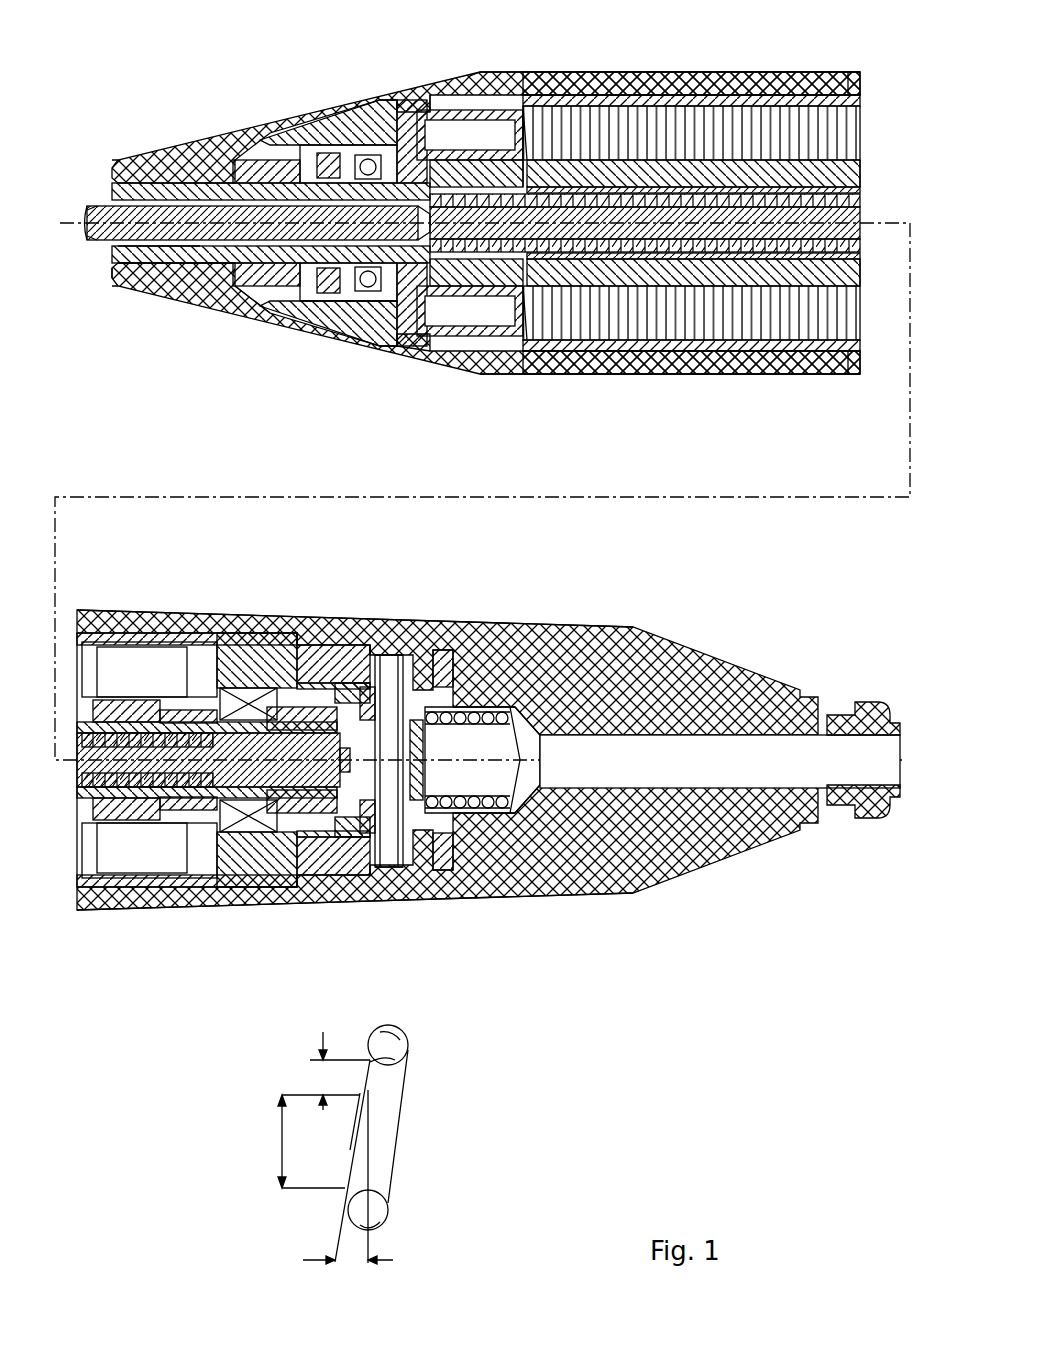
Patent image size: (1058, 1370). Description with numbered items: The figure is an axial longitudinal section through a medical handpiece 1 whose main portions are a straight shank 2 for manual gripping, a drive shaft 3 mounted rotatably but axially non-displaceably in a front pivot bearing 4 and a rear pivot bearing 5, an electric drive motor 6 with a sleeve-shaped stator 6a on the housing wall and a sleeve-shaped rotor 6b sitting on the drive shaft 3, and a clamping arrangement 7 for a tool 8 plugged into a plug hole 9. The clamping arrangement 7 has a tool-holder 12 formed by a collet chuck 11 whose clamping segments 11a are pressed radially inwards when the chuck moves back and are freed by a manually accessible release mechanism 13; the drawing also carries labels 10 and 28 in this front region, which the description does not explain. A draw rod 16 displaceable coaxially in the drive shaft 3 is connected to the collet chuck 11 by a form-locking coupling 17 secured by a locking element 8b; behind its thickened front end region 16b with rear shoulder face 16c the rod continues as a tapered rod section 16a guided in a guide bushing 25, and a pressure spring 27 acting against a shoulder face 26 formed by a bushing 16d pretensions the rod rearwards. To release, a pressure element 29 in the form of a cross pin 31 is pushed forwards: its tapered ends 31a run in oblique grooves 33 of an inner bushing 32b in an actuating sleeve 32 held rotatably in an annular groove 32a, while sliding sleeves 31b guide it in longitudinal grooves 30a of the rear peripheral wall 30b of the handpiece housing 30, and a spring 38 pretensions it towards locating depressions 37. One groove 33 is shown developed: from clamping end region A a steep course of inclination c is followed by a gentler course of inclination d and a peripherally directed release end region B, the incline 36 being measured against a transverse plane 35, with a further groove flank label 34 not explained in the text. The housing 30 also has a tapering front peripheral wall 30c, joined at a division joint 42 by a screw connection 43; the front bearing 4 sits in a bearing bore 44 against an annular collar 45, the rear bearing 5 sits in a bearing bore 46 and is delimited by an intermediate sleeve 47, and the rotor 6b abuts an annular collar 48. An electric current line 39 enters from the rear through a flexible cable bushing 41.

The handpiece 1 is at (378, 366).
The shank 2 is at (612, 380).
The drive shaft 3 is at (617, 290).
The front pivot bearing 4 is at (335, 128).
The rear pivot bearing 5 is at (250, 835).
The drive motor 6 is at (690, 72).
The stator 6a is at (768, 115).
The rotor 6b is at (845, 175).
The clamping arrangement 7 is at (160, 158).
The tool 8 is at (108, 193).
The locking element 8b is at (215, 180).
The plug hole 9 is at (100, 236).
The drive shaft 10 is at (97, 216).
The collet chuck 11 is at (138, 282).
The clamping segments 11a is at (155, 265).
The tool-holder 12 is at (105, 268).
The release mechanism 13 is at (387, 653).
The rod 16 is at (515, 325).
The rod section 16a is at (677, 290).
The front end region 16b is at (292, 138).
The shoulder face 16c is at (450, 180).
The bushing 16d is at (420, 770).
The coupling 17 is at (255, 300).
The guide bushing 25 is at (510, 175).
The shoulder face 26 is at (200, 712).
The pressure spring 27 is at (727, 290).
The stator lamination 28 is at (257, 760).
The pressure element 29 is at (455, 750).
The handpiece housing 30 is at (258, 615).
The longitudinal grooves 30a is at (365, 880).
The rear peripheral wall 30b is at (165, 614).
The front peripheral wall 30c is at (392, 100).
The cross pin 31 is at (377, 754).
The ends 31a is at (400, 652).
The sliding sleeves 31b is at (453, 680).
The actuating sleeve 32 is at (305, 643).
The annular groove 32a is at (330, 642).
The inner bushing 32b is at (355, 645).
The grooves 33 is at (420, 650).
The leaf flank 34 is at (373, 1165).
The transverse plane 35 is at (365, 1263).
The incline 36 is at (352, 1145).
The locating depressions 37 is at (380, 1027).
The spring 38 is at (515, 710).
The electric current line 39 is at (708, 735).
The cable bushing 41 is at (770, 708).
The division joint 42 is at (445, 98).
The screw connection 43 is at (480, 73).
The bearing bore 44 is at (325, 302).
The annular collar 45 is at (400, 360).
The bearing bore 46 is at (235, 887).
The intermediate sleeve 47 is at (130, 708).
The annular collar 48 is at (523, 138).
The end region A is at (404, 1037).
The end region B is at (386, 1205).
The course of inclination c is at (326, 1071).
The course of inclination d is at (309, 1141).